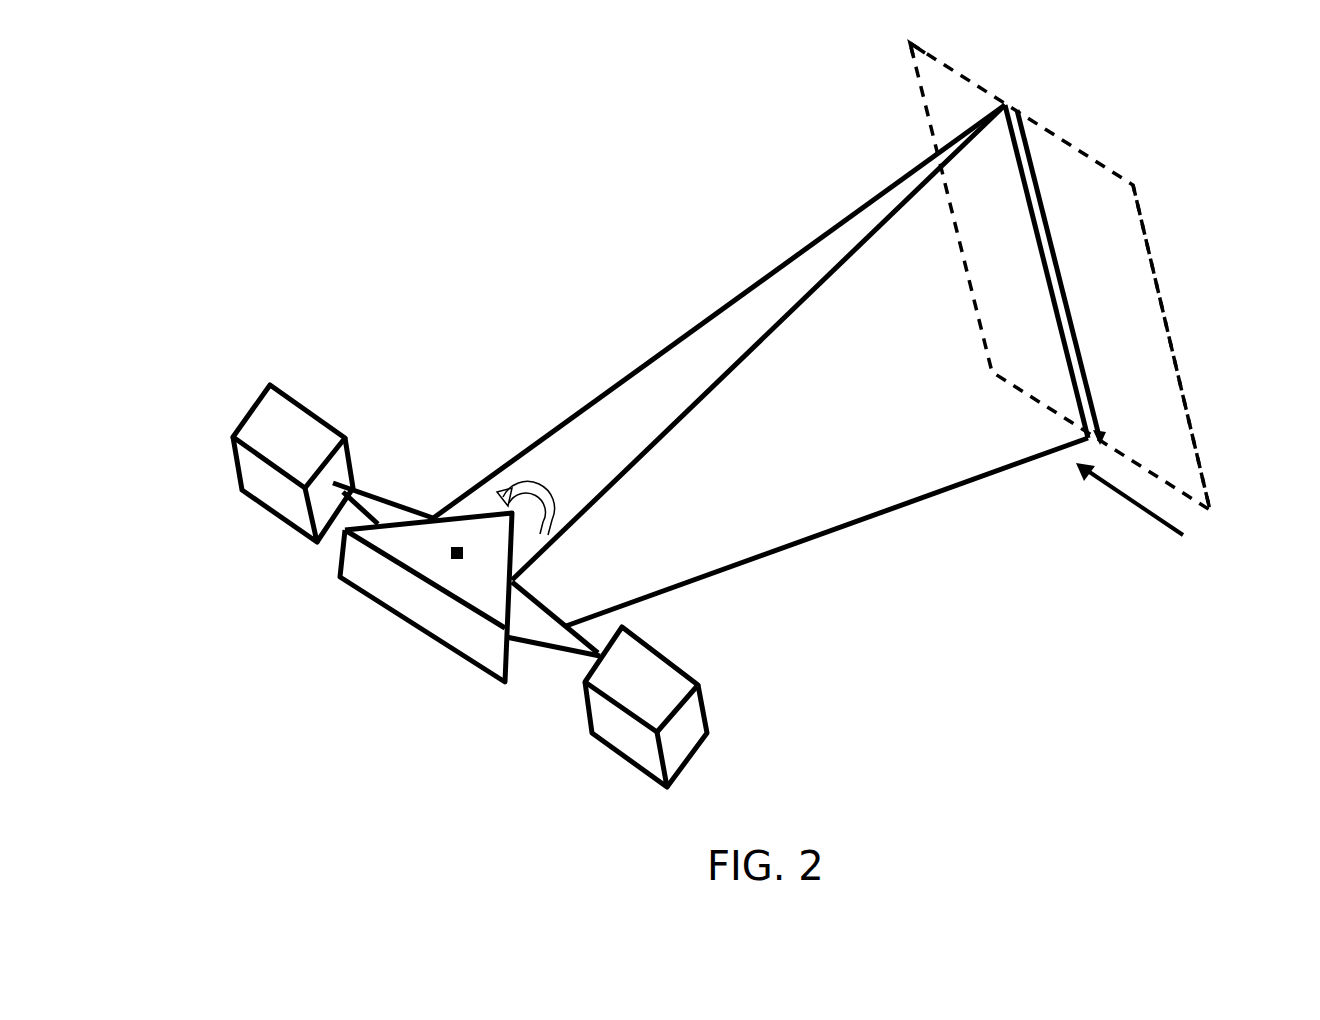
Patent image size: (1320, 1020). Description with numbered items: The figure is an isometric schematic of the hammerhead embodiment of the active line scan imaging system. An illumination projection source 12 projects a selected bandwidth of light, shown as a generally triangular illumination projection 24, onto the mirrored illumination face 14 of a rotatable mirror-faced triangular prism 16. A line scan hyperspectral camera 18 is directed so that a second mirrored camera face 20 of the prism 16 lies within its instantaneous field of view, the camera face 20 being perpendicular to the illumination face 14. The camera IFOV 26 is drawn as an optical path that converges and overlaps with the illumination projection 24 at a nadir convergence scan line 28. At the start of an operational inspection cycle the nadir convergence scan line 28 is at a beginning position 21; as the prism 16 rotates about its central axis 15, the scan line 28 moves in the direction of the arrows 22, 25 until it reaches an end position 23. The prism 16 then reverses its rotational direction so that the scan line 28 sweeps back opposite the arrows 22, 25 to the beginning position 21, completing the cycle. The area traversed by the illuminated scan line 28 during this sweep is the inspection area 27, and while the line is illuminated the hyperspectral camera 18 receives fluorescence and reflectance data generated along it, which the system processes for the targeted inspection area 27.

The illumination projection source 12 is at (612, 728).
The illumination face 14 is at (522, 645).
The central axis 15 is at (450, 554).
The rotatable mirror-faced triangular prism 16 is at (415, 602).
The line scan hyperspectral camera 18 is at (278, 482).
The camera face 20 is at (405, 512).
The beginning position 21 is at (1140, 181).
The arrow 22 is at (1145, 511).
The end position 23 is at (908, 46).
The illumination projection 24 is at (872, 470).
The arrow 25 is at (538, 487).
The camera IFOV 26 is at (685, 332).
The inspection area 27 is at (1130, 316).
The nadir convergence scan line 28 is at (1045, 185).